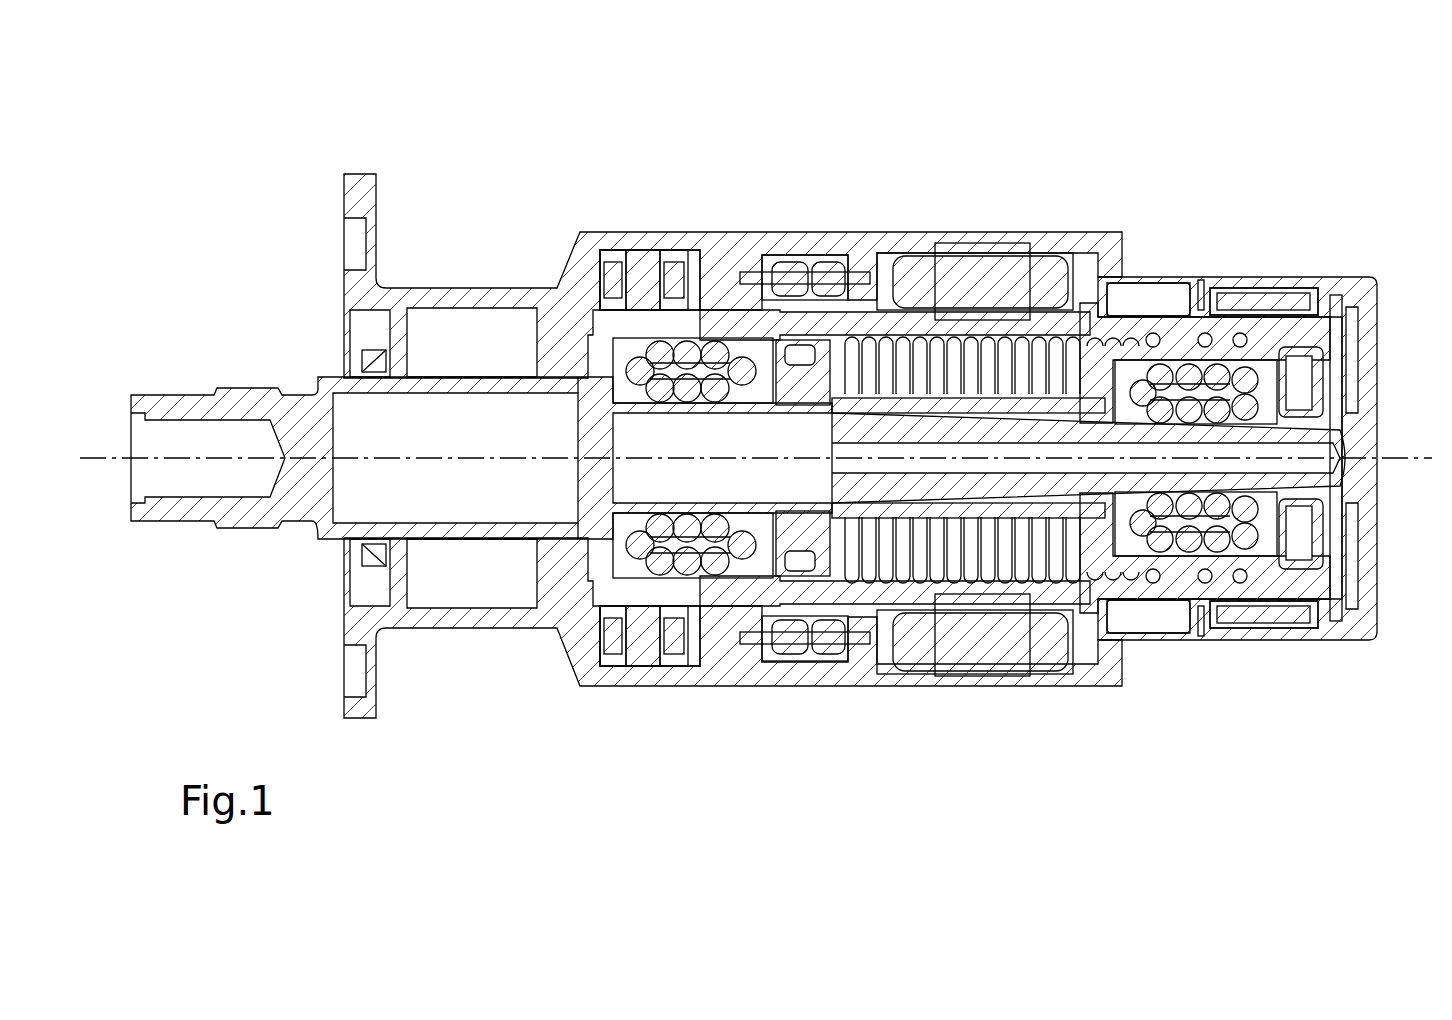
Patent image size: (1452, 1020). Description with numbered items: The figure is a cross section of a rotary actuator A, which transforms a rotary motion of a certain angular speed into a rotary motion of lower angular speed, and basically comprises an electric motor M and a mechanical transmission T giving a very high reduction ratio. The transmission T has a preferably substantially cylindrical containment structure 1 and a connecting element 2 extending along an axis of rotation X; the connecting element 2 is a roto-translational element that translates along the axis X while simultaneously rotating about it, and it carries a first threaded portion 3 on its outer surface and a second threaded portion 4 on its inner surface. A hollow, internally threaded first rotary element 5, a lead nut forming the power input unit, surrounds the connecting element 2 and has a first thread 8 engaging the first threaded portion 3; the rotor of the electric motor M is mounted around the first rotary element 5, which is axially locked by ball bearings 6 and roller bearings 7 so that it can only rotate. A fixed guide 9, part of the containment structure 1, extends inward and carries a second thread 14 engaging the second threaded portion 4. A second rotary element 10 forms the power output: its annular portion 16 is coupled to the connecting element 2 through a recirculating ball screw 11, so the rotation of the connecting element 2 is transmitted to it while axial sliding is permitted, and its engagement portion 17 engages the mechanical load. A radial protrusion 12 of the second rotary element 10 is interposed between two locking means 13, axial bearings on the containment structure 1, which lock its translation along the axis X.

The rotary actuator A is at (265, 158).
The axis of rotation X is at (1424, 463).
The containment structure 1 is at (910, 228).
The mechanical transmission T is at (1158, 226).
The second rotary element 10 is at (590, 303).
The engagement portion 17 is at (340, 386).
The second thread 14 is at (1047, 493).
The locking means 13 is at (615, 645).
The radial protrusion 12 is at (642, 655).
The recirculating ball screw 11 is at (688, 352).
The annular portion 16 is at (722, 590).
The ball bearings 6 is at (825, 262).
The electric motor M is at (985, 245).
The first thread 8 is at (1085, 343).
The first threaded portion 3 is at (1152, 570).
The connecting element 2 is at (1218, 357).
The second threaded portion 4 is at (1250, 552).
The first rotary element 5 is at (1143, 313).
The roller bearings 7 is at (1285, 307).
The fixed guide 9 is at (1328, 430).